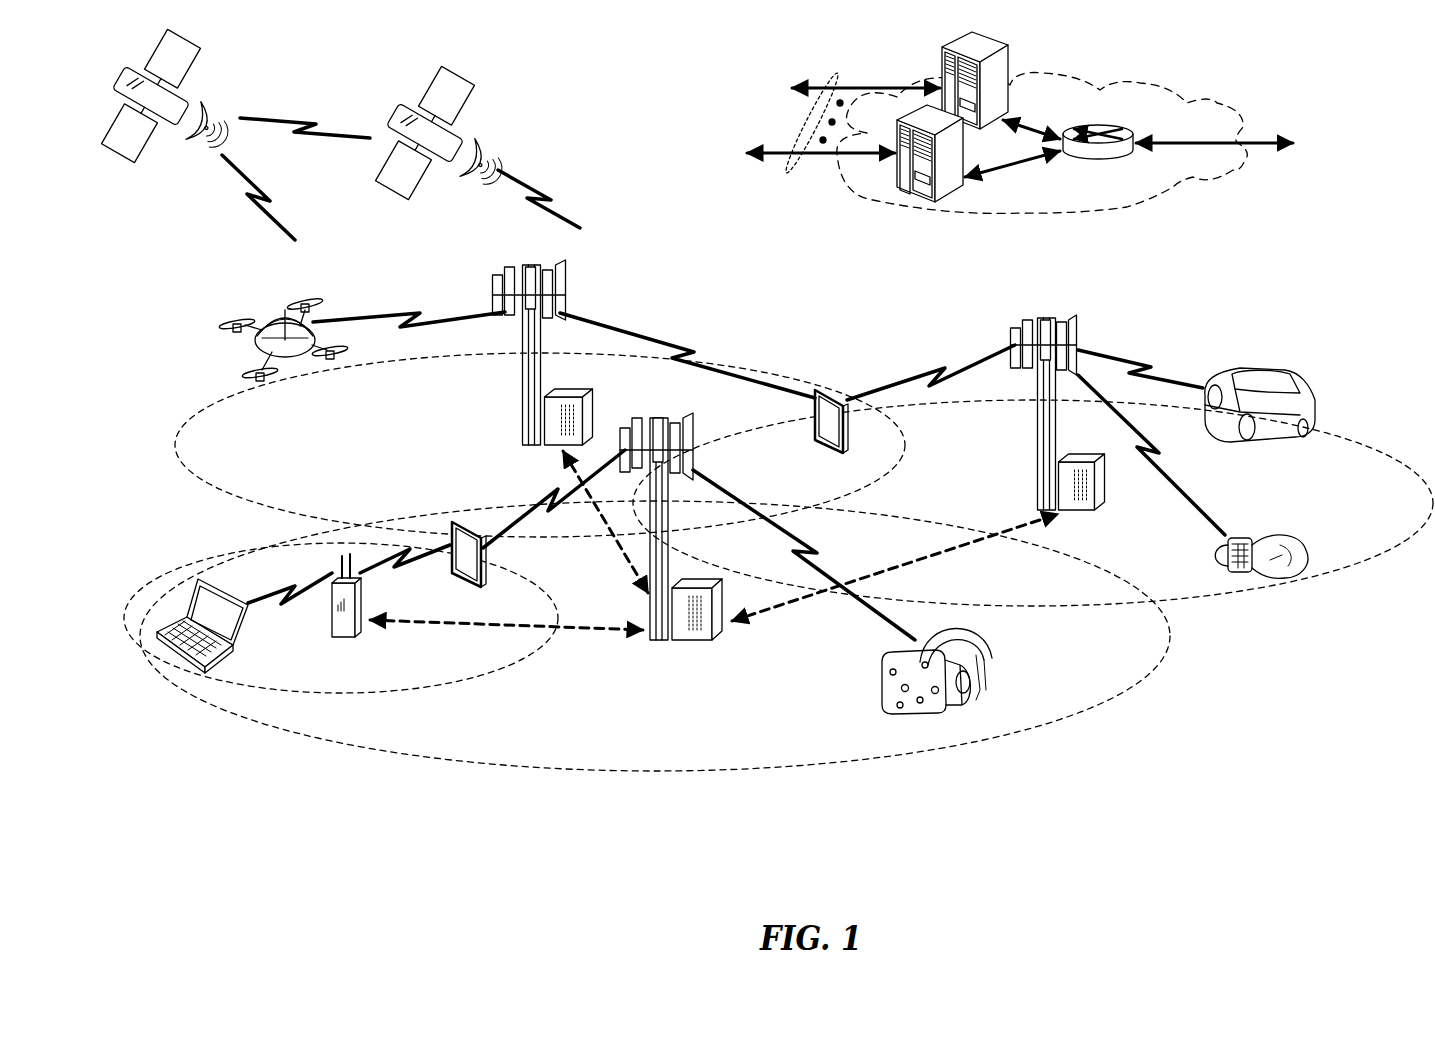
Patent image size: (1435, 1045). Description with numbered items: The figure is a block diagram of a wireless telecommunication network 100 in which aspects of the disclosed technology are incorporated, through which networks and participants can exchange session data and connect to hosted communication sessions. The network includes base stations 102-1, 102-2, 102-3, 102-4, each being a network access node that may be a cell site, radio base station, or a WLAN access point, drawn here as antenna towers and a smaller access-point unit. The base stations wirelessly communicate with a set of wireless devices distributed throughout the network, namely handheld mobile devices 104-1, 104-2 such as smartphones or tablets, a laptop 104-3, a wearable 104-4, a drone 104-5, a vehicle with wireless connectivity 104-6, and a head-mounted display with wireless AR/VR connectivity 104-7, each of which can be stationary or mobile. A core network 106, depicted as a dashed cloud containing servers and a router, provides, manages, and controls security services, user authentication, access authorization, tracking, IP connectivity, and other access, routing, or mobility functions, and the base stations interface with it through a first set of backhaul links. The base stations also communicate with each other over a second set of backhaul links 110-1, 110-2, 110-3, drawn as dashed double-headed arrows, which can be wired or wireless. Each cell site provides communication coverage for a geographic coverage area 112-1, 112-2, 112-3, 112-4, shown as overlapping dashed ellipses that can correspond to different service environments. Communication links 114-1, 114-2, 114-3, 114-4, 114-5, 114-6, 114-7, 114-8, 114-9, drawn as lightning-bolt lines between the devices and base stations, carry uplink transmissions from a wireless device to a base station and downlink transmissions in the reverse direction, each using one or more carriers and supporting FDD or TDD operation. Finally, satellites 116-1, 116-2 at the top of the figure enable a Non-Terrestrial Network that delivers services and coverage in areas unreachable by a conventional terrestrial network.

The wireless telecommunication network 100 is at (1368, 96).
The base station 102-1 is at (656, 642).
The base station 102-2 is at (522, 393).
The base station 102-3 is at (1038, 428).
The base station 102-4 is at (336, 625).
The handheld mobile device 104-1 is at (486, 533).
The handheld mobile device 104-2 is at (812, 430).
The laptop 104-3 is at (180, 662).
The wearable 104-4 is at (1248, 532).
The drone 104-5 is at (293, 362).
The vehicle with wireless connectivity 104-6 is at (1284, 380).
The head-mounted display with wireless AR/VR connectivity 104-7 is at (992, 655).
The core network 106 is at (1130, 208).
The backhaul link 110-1 is at (430, 626).
The backhaul link 110-2 is at (1005, 553).
The backhaul link 110-3 is at (615, 550).
The geographic coverage area 112-1 is at (592, 771).
The geographic coverage area 112-2 is at (462, 688).
The geographic coverage area 112-3 is at (229, 495).
The geographic coverage area 112-4 is at (1338, 436).
The communication link 114-1 is at (822, 555).
The communication link 114-2 is at (540, 497).
The communication link 114-3 is at (287, 602).
The communication link 114-4 is at (403, 567).
The communication link 114-5 is at (400, 312).
The communication link 114-6 is at (690, 350).
The communication link 114-7 is at (928, 375).
The communication link 114-8 is at (1165, 455).
The communication link 114-9 is at (1138, 365).
The satellite 116-1 is at (207, 104).
The satellite 116-2 is at (484, 138).